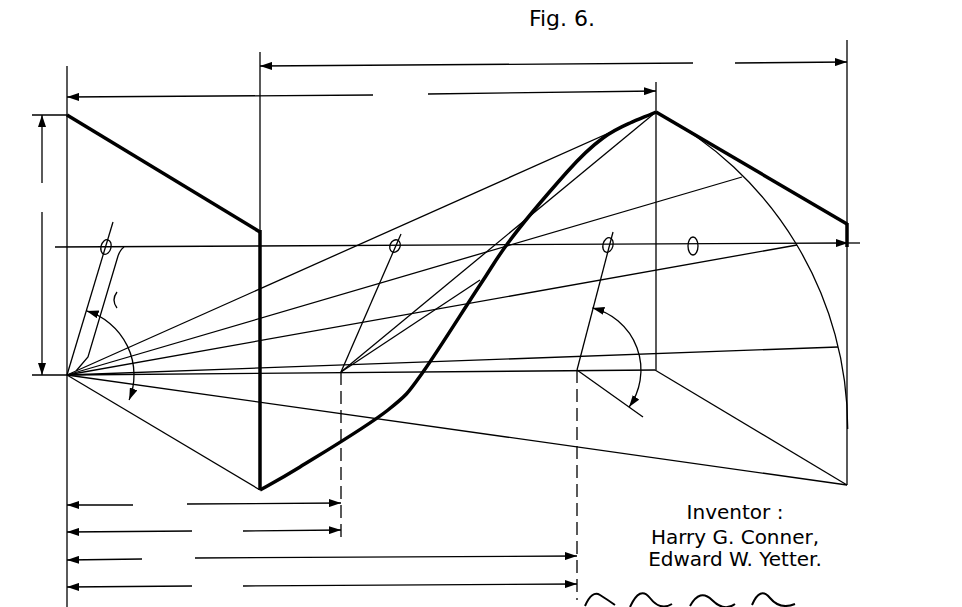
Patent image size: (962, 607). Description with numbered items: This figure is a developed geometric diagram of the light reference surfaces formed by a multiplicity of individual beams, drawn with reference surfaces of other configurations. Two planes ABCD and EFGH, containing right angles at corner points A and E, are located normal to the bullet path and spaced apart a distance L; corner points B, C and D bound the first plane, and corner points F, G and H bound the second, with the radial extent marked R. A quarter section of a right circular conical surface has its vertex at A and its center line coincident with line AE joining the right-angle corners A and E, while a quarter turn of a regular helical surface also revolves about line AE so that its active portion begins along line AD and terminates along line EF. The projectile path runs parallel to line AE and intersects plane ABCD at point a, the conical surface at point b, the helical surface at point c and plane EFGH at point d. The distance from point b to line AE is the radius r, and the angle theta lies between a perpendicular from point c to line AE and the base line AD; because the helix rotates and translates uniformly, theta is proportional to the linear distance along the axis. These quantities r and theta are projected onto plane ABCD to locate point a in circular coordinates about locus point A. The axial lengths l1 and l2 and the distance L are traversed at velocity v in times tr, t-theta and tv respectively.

The right-angle corner point A is at (446, 301).
The corner point B is at (154, 161).
The corner point C is at (271, 350).
The corner point D is at (446, 311).
The right-angle corner point E is at (751, 422).
The corner point F is at (751, 158).
The corner point G is at (845, 220).
The corner point H is at (752, 274).
The intersection point a is at (100, 334).
The intersection point b is at (498, 326).
The intersection point c is at (610, 412).
The intersection point d is at (701, 238).
The plane spacing distance L is at (553, 63).
The outer radius R is at (49, 245).
The time to traverse length L tv is at (361, 96).
The time to traverse length l1 tr is at (204, 505).
The length l1 is at (204, 532).
The length l2 is at (322, 587).